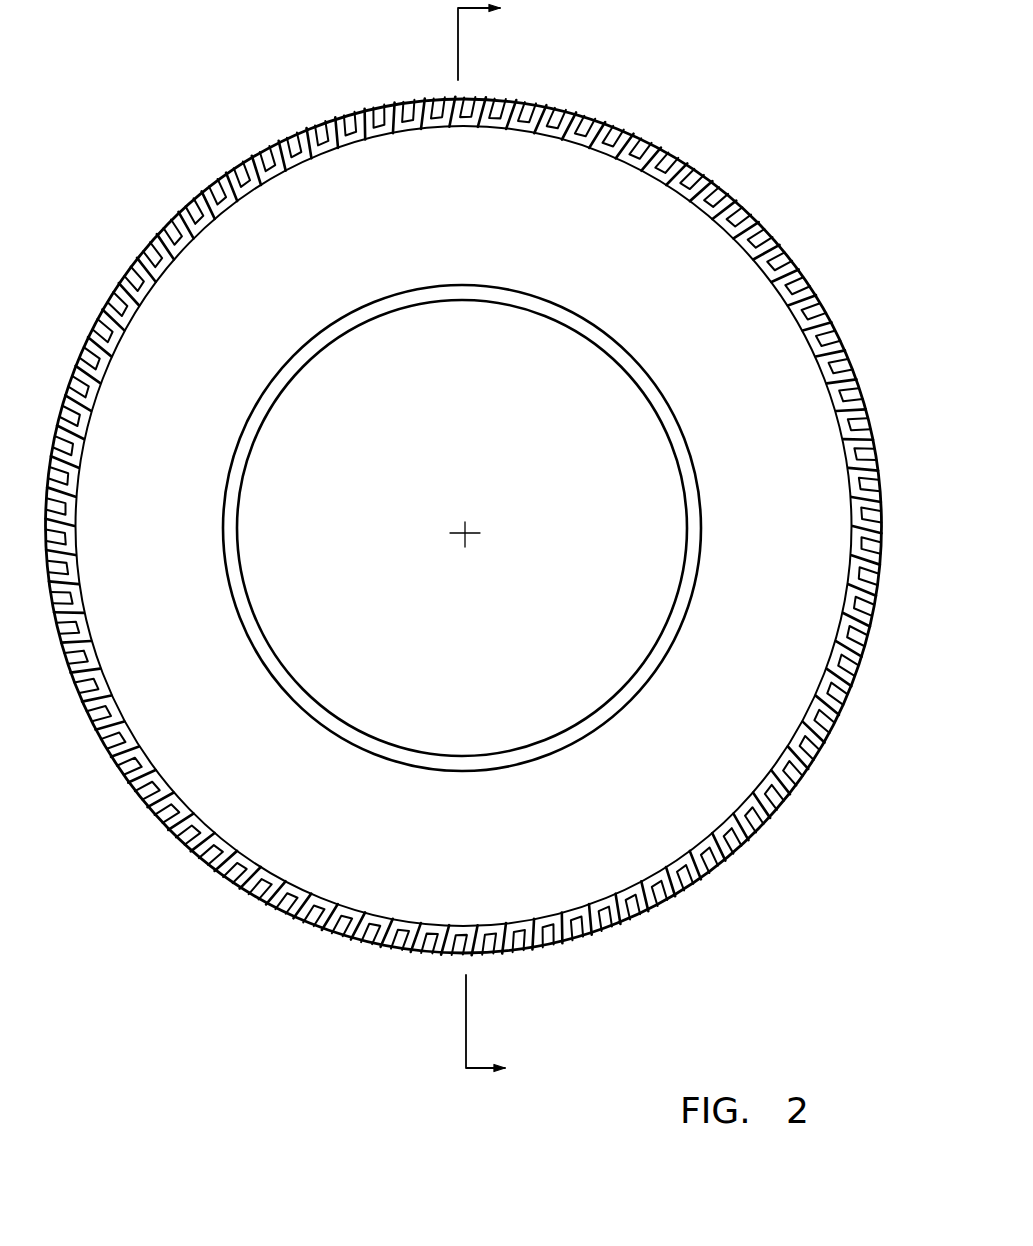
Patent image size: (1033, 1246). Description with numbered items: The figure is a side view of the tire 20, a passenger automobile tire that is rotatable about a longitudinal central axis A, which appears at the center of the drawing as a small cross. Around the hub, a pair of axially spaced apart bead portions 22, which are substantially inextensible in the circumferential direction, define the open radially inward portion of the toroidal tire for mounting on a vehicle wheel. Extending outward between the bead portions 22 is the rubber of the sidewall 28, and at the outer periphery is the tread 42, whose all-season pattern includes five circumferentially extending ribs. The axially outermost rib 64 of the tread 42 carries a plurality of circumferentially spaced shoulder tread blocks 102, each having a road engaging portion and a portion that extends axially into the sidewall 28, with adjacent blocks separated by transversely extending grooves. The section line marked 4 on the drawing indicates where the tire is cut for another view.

The tire 20 is at (633, 97).
The bead portions 22 is at (230, 517).
The sidewall 28 is at (230, 280).
The tread 42 is at (464, 502).
The rib 64 is at (782, 240).
The shoulder tread blocks 102 is at (696, 869).
The longitudinal central axis A is at (465, 532).
The section line 4- 4 is at (498, 545).